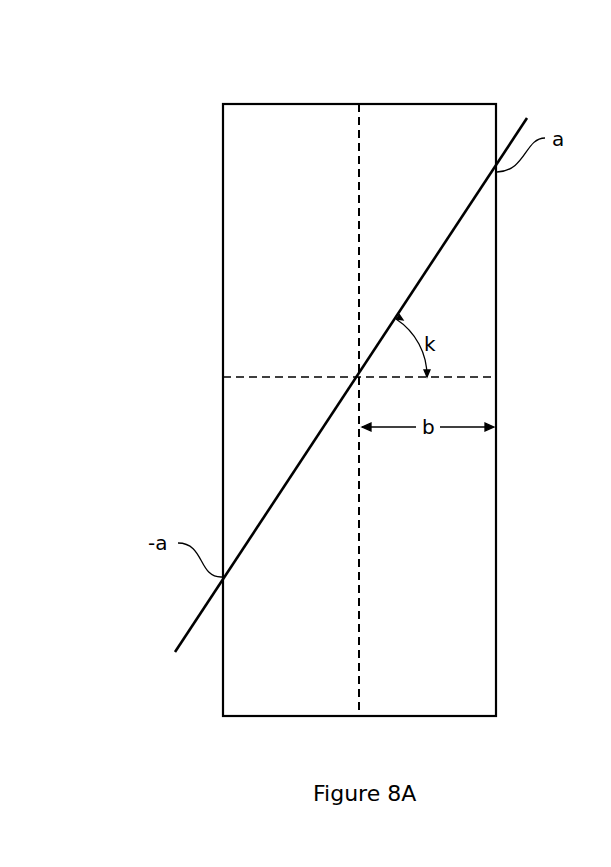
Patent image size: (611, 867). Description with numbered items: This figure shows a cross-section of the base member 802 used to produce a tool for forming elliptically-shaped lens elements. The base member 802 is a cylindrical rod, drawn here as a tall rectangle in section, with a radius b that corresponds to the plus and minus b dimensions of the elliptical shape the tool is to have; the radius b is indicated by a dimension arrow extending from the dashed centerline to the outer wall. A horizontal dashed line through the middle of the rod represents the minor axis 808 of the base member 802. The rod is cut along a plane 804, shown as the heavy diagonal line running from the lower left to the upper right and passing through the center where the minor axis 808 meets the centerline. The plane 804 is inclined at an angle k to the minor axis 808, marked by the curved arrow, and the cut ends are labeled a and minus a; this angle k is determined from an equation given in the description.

The base member 802 is at (224, 214).
The plane 804 is at (183, 638).
The minor axis 808 is at (268, 377).